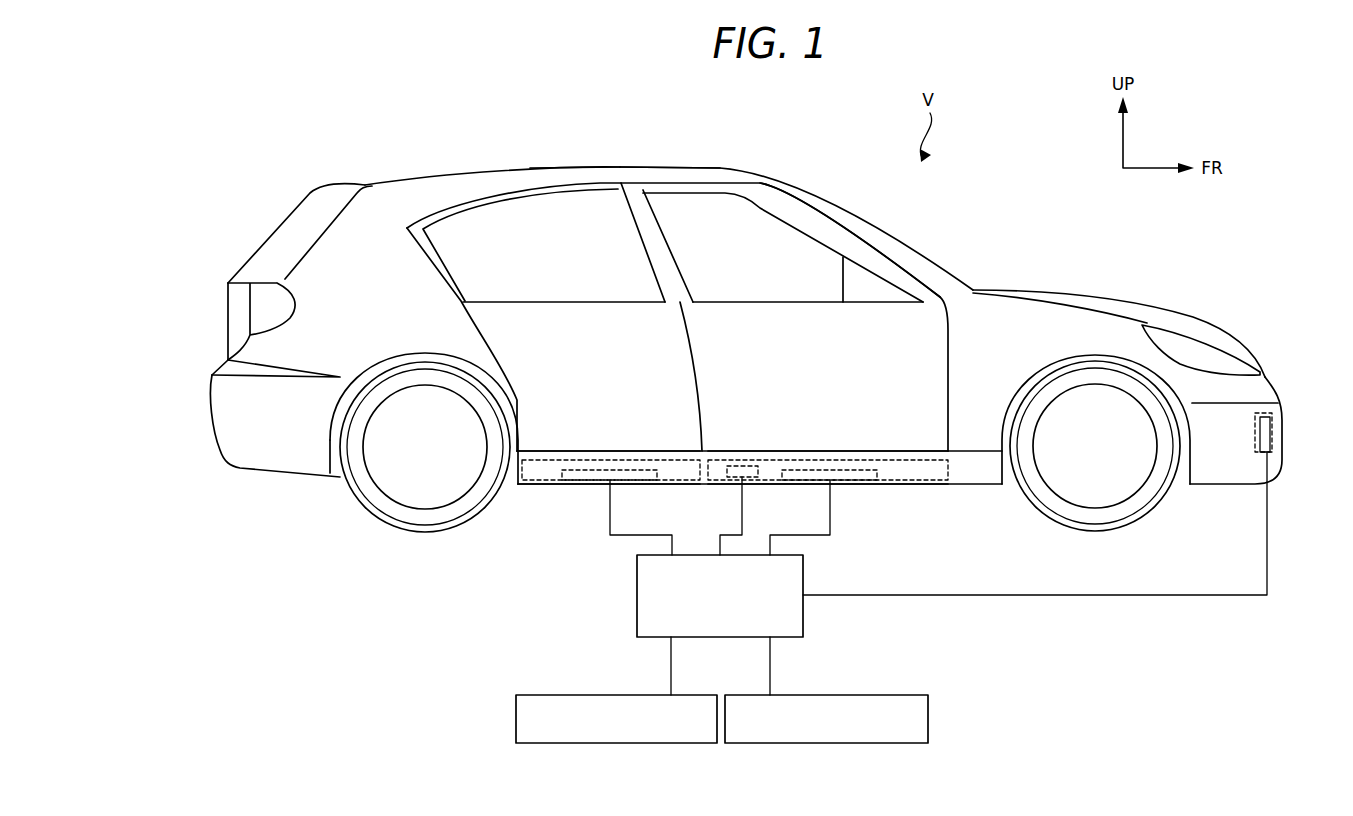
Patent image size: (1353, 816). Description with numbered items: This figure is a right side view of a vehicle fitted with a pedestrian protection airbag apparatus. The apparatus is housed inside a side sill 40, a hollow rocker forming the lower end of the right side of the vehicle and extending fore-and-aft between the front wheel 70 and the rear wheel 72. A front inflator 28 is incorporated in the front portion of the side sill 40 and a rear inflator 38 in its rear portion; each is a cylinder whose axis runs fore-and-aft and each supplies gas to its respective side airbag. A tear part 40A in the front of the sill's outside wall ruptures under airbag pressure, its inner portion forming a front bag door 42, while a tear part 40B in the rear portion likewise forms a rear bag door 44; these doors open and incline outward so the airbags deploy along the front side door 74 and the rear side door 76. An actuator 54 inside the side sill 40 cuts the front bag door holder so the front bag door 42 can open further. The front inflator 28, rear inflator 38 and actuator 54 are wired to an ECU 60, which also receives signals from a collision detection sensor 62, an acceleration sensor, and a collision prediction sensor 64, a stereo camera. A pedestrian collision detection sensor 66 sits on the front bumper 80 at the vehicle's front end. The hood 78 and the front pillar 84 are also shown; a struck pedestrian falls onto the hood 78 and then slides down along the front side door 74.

The front inflator 28 is at (838, 470).
The rear inflator 38 is at (618, 470).
The side sill 40 is at (988, 473).
The tear part 40A is at (950, 470).
The tear part 40B is at (525, 484).
The front bag door 42 is at (910, 472).
The rear bag door 44 is at (545, 472).
The actuator 54 is at (750, 465).
The ECU 60 is at (637, 593).
The collision detection sensor 62 is at (516, 718).
The collision prediction sensor 64 is at (930, 717).
The pedestrian collision detection sensor 66 is at (1266, 412).
The front wheel 70 is at (1163, 503).
The rear wheel 72 is at (412, 533).
The front side door 74 is at (690, 188).
The rear side door 76 is at (592, 188).
The hood 78 is at (1095, 292).
The front bumper 80 is at (1282, 420).
The front pillar 84 is at (863, 235).